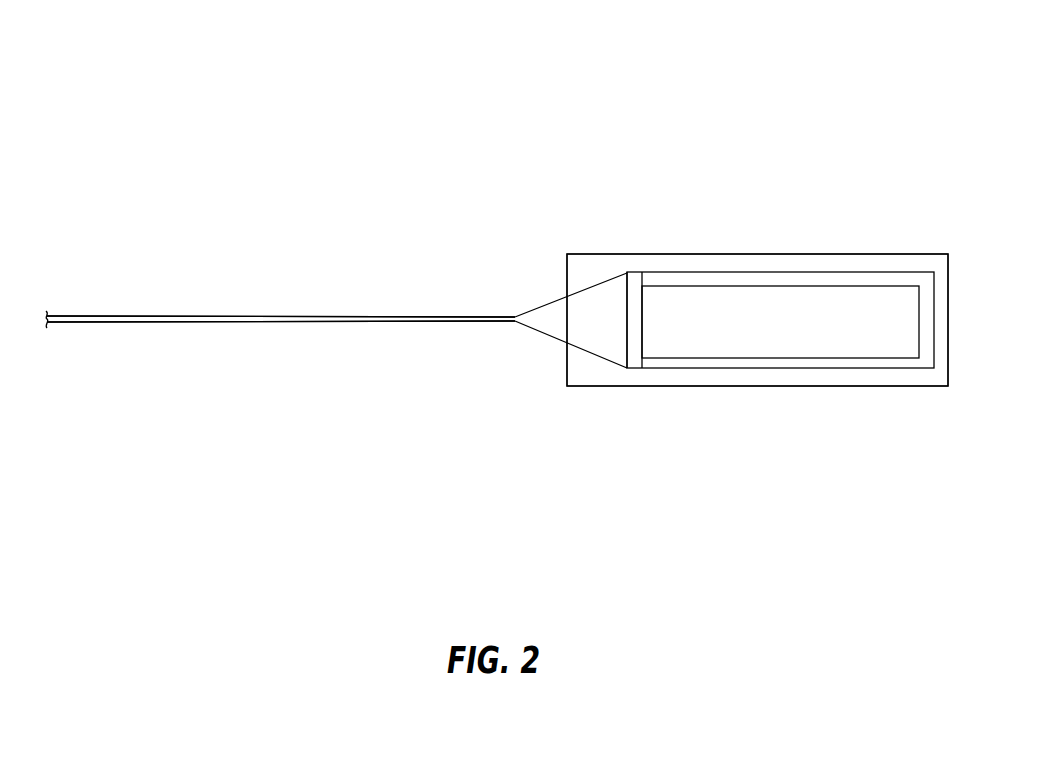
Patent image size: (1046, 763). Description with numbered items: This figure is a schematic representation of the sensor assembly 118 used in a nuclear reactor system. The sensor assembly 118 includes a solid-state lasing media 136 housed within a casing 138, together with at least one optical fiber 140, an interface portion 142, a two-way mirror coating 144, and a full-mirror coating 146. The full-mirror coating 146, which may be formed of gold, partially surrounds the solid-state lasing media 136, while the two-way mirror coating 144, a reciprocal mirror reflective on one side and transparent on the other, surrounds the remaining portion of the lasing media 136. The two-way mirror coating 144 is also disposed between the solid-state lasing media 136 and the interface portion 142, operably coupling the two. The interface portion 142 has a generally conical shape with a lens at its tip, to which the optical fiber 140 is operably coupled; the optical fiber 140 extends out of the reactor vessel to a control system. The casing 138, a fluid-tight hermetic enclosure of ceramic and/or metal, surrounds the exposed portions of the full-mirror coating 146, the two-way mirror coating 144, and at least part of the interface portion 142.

The sensor assembly 118 is at (713, 145).
The solid-state lasing media 136 is at (736, 318).
The casing 138 is at (834, 263).
The optical fiber 140 is at (330, 322).
The interface portion 142 is at (560, 320).
The two-way mirror coating 144 is at (832, 364).
The full-mirror coating 146 is at (634, 357).